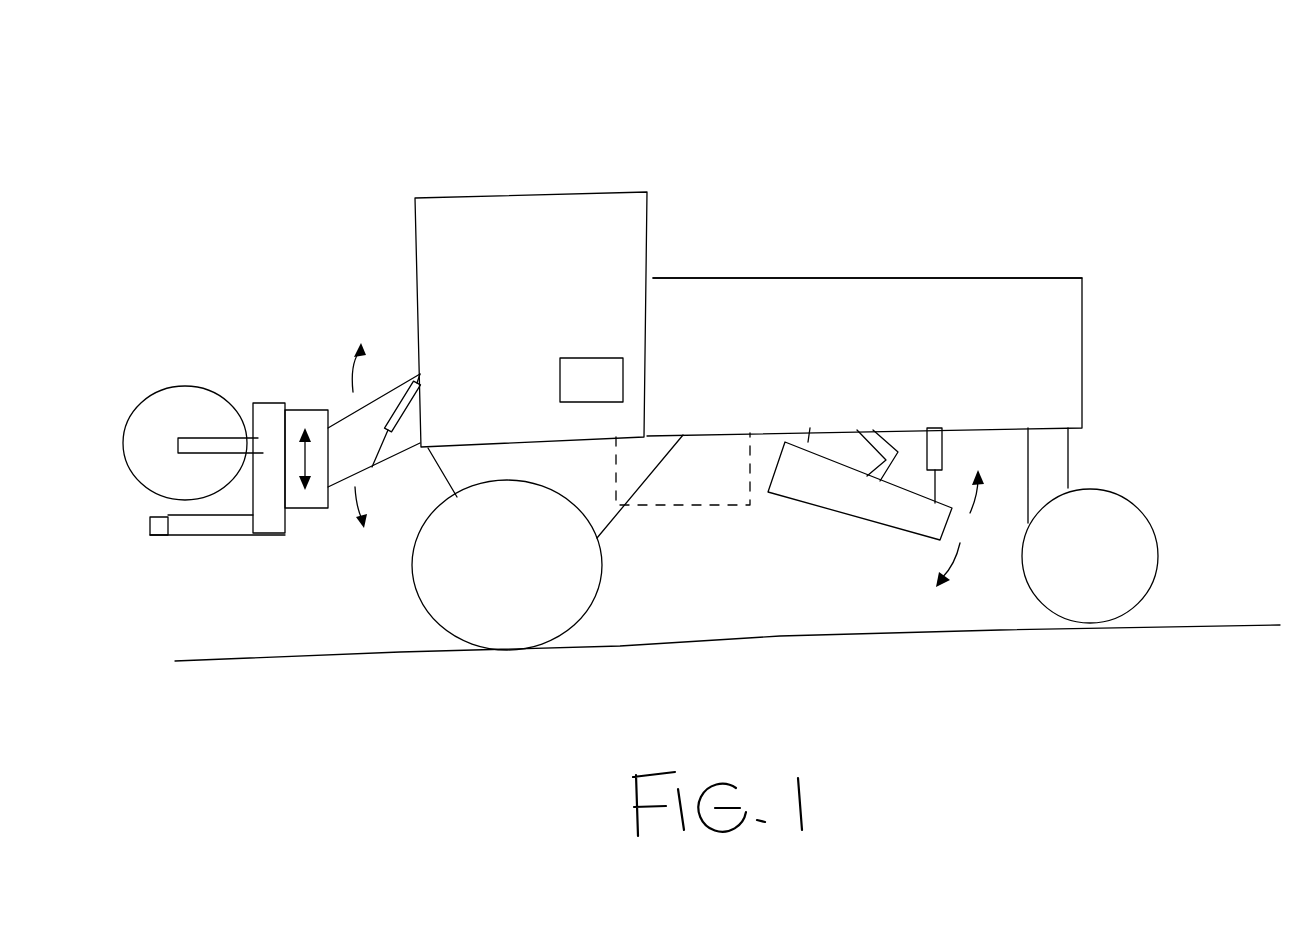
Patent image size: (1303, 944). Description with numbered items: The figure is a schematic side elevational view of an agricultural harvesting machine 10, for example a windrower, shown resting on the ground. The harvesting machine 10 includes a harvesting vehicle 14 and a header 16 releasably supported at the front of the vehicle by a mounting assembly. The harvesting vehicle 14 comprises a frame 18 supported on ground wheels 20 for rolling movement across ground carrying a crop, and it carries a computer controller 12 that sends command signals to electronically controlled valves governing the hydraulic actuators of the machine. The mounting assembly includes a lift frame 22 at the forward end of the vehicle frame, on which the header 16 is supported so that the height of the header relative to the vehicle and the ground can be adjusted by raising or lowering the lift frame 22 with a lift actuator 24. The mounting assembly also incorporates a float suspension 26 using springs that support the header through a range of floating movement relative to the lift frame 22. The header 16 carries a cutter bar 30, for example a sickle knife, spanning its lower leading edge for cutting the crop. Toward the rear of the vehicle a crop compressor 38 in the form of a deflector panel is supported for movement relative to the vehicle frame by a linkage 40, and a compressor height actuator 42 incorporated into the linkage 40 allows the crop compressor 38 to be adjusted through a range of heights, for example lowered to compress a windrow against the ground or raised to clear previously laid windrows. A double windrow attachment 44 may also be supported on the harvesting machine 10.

The harvesting machine 10 is at (902, 125).
The computer controller 12 is at (606, 401).
The harvesting vehicle 14 is at (738, 266).
The header 16 is at (205, 327).
The frame 18 is at (877, 280).
The ground wheels 20 is at (568, 611).
The lift frame 22 is at (385, 388).
The lift actuator 24 is at (412, 408).
The float suspension 26 is at (308, 410).
The cutter bar 30 is at (158, 537).
The crop compressor 38 is at (883, 520).
The linkage 40 is at (887, 430).
The compressor height actuator 42 is at (944, 457).
The double windrow attachment 44 is at (703, 502).